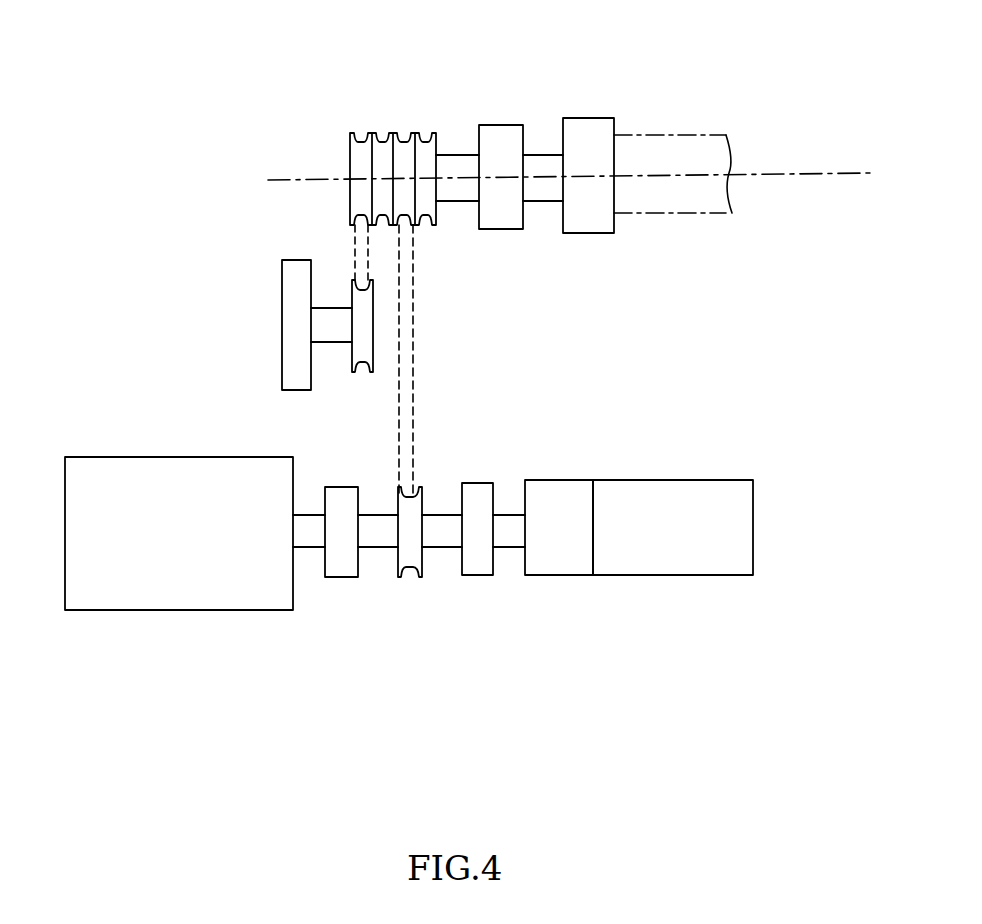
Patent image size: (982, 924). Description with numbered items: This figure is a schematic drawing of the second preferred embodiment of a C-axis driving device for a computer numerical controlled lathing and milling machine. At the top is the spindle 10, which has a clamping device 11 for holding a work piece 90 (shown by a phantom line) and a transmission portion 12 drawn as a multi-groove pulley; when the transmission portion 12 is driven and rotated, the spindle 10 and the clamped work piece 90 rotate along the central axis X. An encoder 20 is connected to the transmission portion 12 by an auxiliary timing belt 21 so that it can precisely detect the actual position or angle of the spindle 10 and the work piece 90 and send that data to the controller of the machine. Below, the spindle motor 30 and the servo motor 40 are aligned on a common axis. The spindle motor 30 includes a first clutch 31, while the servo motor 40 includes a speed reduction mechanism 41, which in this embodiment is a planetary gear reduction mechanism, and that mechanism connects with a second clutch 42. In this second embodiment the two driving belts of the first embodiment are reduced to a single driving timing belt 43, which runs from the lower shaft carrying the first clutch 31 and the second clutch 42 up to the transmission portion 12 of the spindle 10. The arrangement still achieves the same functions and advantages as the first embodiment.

The spindle 10 is at (455, 160).
The clamping device 11 is at (592, 127).
The transmission portion 12 is at (378, 148).
The encoder 20 is at (286, 315).
The auxiliary timing belt 21 is at (352, 238).
The spindle motor 30 is at (188, 600).
The first clutch 31 is at (343, 577).
The servo motor 40 is at (668, 575).
The speed reduction mechanism 41 is at (557, 575).
The second clutch 42 is at (480, 575).
The driving timing belt 43 is at (415, 328).
The work piece 90 is at (668, 135).
The central axis X is at (785, 173).